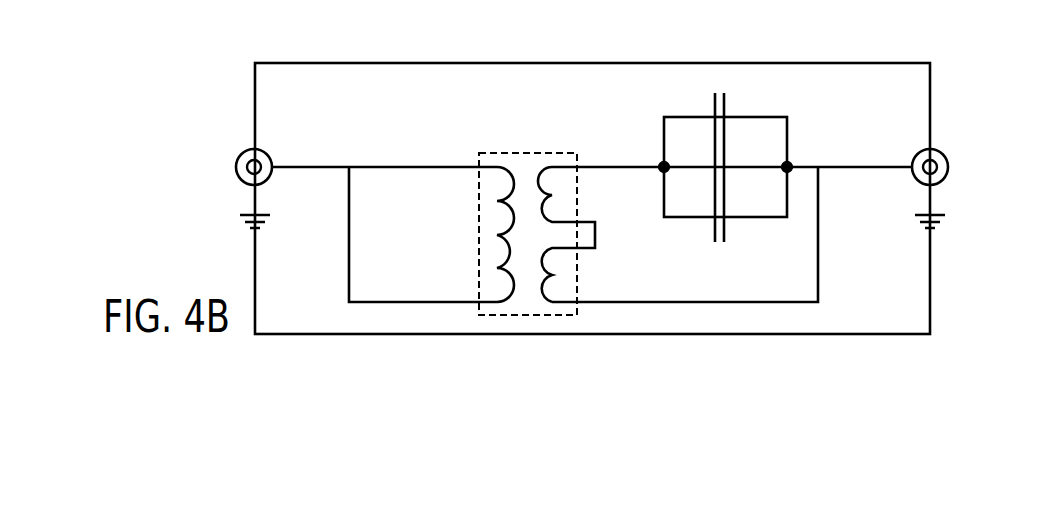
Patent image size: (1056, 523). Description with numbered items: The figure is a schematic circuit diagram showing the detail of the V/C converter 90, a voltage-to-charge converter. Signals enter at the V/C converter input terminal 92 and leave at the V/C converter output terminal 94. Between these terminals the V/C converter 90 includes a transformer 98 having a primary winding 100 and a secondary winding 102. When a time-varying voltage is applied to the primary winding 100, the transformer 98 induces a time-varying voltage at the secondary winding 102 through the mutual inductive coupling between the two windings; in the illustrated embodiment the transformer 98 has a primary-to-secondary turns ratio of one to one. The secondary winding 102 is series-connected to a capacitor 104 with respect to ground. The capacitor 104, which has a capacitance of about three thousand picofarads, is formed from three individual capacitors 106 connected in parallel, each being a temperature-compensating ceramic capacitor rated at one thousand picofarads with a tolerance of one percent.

The V/C converter 90 is at (960, 87).
The V/C converter input terminal 92 is at (234, 166).
The V/C converter output terminal 94 is at (949, 166).
The transformer 98 is at (553, 166).
The primary winding 100 is at (495, 162).
The secondary winding 102 is at (557, 162).
The capacitor 104 is at (733, 139).
The individual capacitor 106 is at (713, 100).